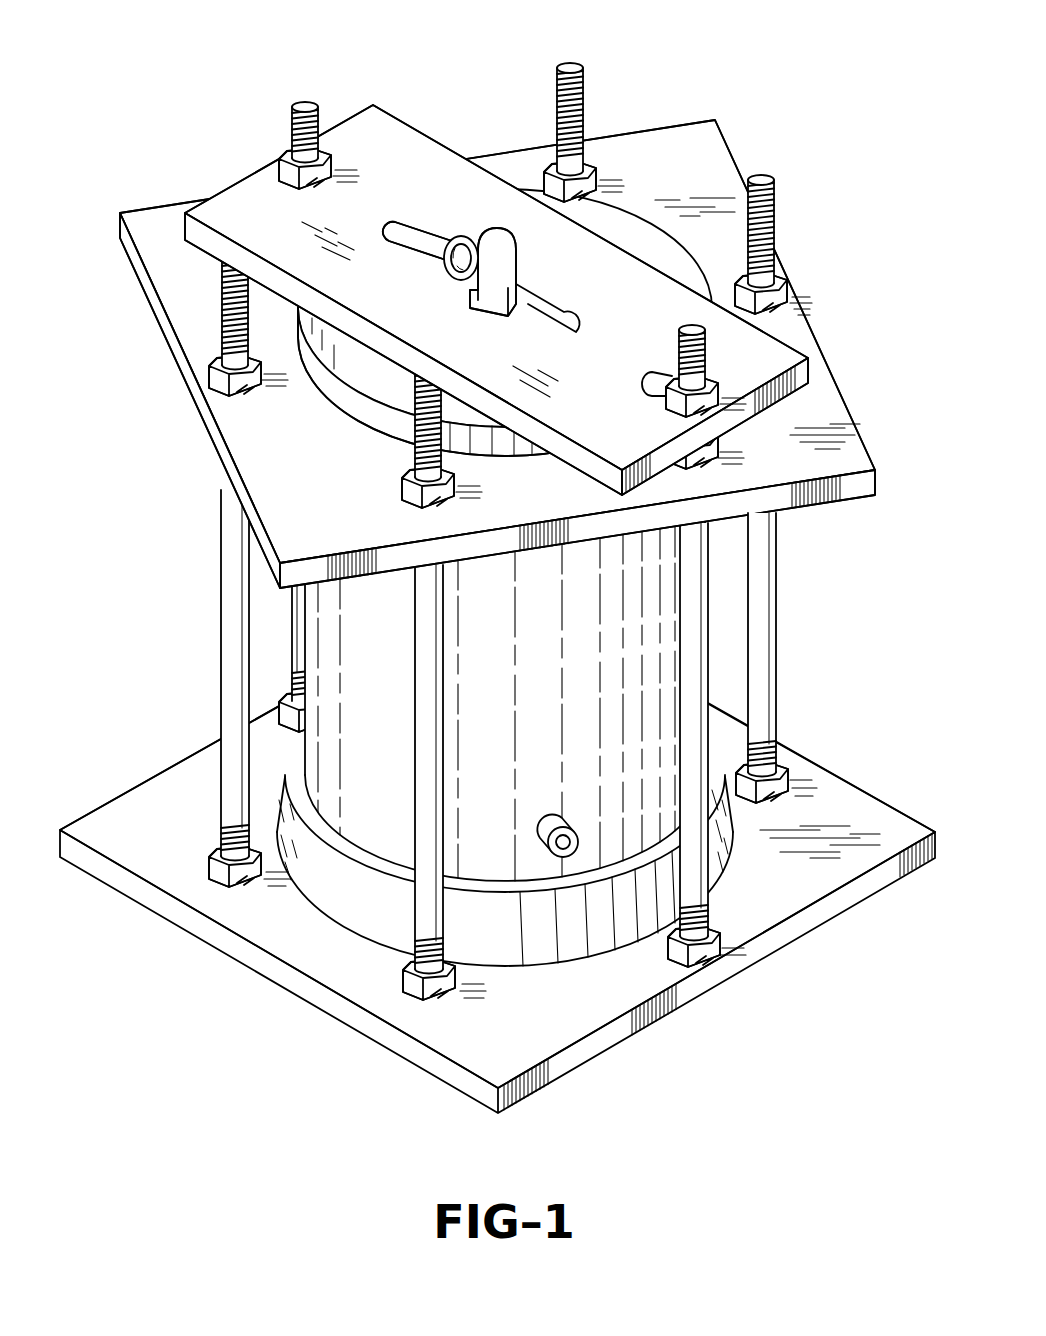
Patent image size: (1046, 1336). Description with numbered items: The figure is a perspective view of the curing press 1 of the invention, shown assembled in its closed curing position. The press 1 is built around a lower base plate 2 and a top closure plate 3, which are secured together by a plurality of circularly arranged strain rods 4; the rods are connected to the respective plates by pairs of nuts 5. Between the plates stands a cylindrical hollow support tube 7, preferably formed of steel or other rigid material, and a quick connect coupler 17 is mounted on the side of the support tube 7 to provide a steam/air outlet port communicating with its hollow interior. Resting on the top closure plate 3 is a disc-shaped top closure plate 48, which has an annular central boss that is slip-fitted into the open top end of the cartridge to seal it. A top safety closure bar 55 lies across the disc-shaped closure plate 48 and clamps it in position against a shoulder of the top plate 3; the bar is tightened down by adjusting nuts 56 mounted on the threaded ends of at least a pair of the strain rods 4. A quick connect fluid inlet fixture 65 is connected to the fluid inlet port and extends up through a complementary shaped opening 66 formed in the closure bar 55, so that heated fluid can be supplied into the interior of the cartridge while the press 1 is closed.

The curing press 1 is at (497, 556).
The lower base plate 2 is at (558, 1033).
The top closure plate 3 is at (707, 147).
The strain rods 4 is at (763, 620).
The nuts 5 is at (783, 293).
The cylindrical hollow support tube 7 is at (345, 648).
The quick connect coupler 17 is at (552, 823).
The disc-shaped top closure plate 48 is at (387, 390).
The top safety closure bar 55 is at (374, 122).
The adjusting nuts 56 is at (713, 450).
The quick connect fluid inlet fixture 65 is at (493, 245).
The opening 66 is at (523, 303).